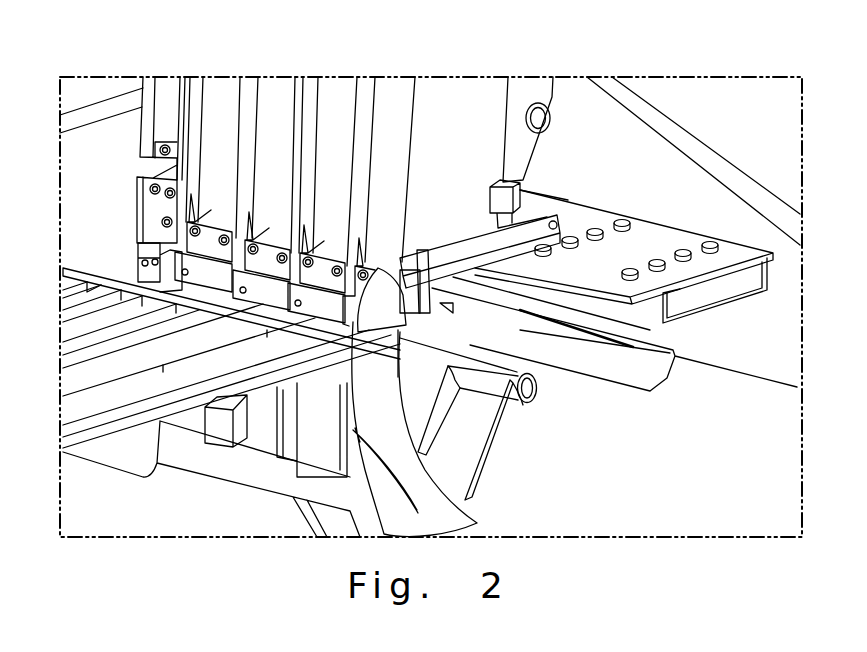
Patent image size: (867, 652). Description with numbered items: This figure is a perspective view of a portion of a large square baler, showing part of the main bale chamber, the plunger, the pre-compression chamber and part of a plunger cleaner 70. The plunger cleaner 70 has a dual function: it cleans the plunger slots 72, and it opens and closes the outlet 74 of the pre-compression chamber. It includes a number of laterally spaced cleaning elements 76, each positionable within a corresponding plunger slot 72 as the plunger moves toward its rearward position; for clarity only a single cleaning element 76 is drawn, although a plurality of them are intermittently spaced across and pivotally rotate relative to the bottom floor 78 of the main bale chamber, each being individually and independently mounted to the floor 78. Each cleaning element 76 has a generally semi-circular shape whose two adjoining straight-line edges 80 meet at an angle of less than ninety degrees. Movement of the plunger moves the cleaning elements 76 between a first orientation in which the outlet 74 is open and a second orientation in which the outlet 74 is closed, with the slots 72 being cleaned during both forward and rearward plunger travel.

The plunger cleaner 70 is at (418, 327).
The plunger slots 72 is at (362, 132).
The outlet 74 is at (245, 258).
The cleaning element 76 is at (382, 338).
The bottom floor 78 is at (657, 250).
The straight-line edges 80 is at (392, 277).